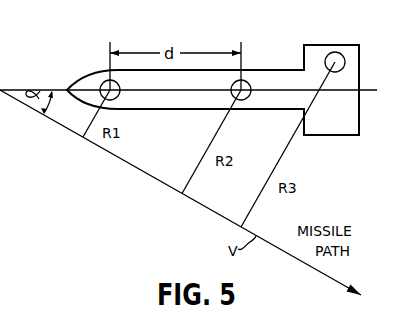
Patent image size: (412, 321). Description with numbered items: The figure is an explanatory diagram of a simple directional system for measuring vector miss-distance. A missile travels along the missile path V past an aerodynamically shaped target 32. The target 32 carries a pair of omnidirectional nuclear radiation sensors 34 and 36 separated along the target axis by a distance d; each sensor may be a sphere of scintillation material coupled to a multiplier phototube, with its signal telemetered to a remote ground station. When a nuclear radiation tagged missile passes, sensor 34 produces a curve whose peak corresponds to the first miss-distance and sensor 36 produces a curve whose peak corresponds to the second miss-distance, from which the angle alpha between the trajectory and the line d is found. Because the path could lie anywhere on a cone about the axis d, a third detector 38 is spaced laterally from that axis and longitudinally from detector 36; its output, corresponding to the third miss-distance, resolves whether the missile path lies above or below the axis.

The aerodynamically shaped target 32 is at (264, 70).
The omnidirectional nuclear radiation sensor 34 is at (115, 95).
The omnidirectional nuclear radiation sensor 36 is at (246, 96).
The third detector 38 is at (333, 52).